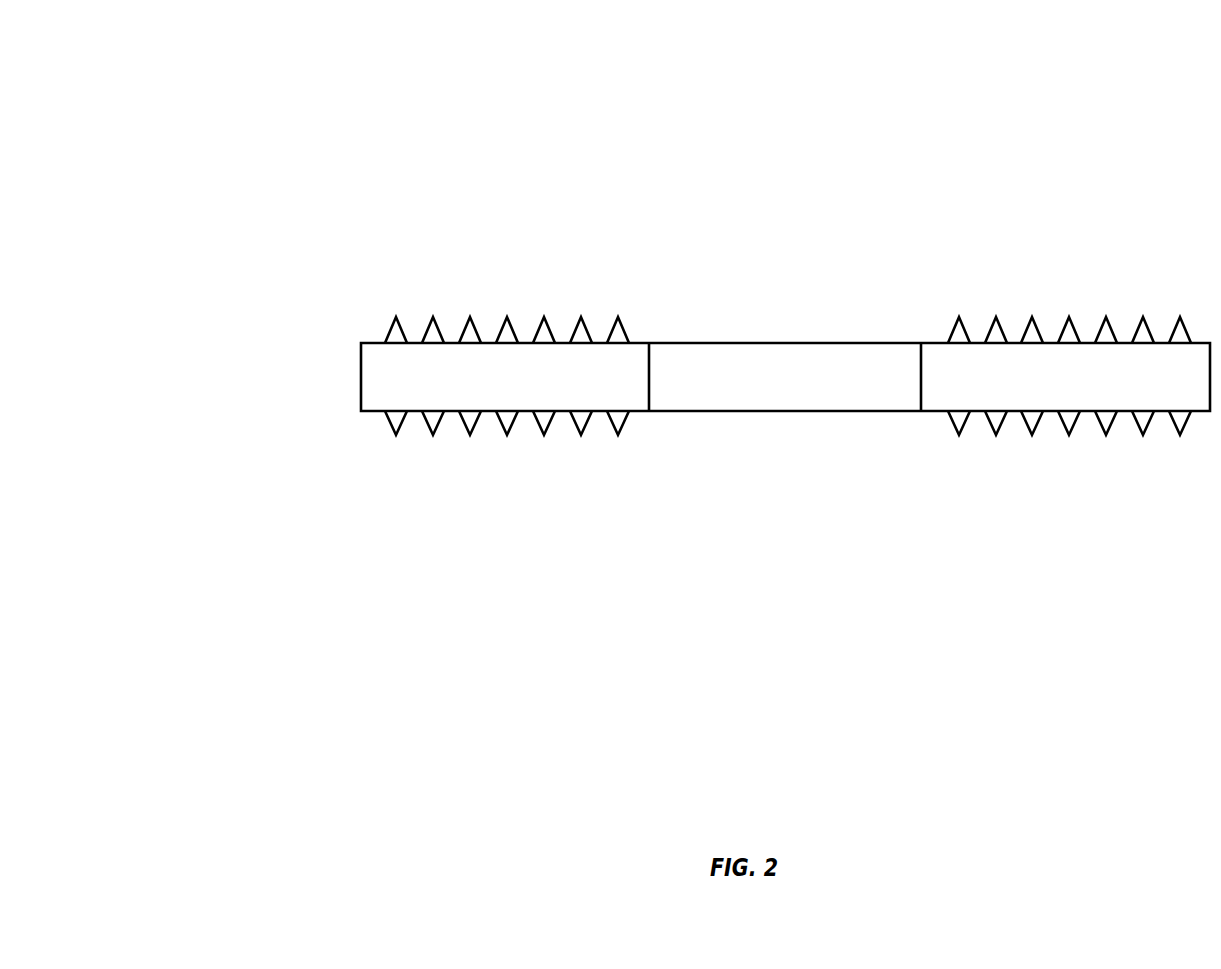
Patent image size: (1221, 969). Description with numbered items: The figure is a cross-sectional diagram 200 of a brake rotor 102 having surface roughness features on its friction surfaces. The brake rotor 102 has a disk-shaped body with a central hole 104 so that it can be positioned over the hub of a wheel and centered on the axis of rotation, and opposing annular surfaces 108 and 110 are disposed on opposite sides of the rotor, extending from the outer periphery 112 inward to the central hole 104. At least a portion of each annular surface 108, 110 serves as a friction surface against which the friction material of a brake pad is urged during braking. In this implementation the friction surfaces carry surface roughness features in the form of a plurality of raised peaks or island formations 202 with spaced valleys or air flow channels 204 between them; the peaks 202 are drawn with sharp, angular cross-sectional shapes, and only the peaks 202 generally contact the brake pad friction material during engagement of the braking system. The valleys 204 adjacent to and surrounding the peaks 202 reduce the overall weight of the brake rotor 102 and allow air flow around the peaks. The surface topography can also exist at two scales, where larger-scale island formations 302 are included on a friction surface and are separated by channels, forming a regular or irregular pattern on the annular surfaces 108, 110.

The cross-sectional diagram 200 is at (285, 110).
The brake rotor 102 is at (1213, 560).
The central hole 104 is at (803, 373).
The annular surface 108 is at (638, 342).
The annular surface 110 is at (932, 413).
The outer periphery 112 is at (358, 377).
The peaks 202 is at (430, 337).
The valleys 204 is at (560, 335).
The island formations 302 is at (463, 428).